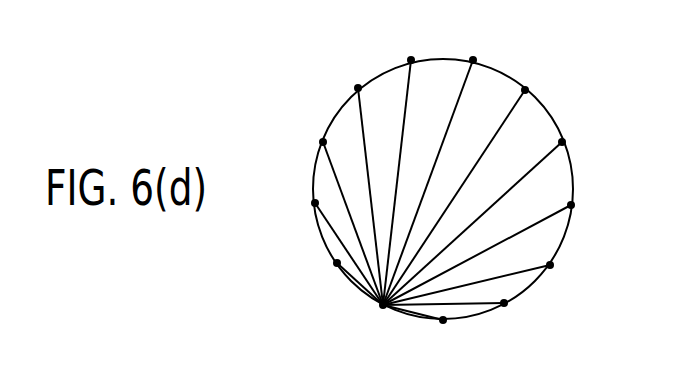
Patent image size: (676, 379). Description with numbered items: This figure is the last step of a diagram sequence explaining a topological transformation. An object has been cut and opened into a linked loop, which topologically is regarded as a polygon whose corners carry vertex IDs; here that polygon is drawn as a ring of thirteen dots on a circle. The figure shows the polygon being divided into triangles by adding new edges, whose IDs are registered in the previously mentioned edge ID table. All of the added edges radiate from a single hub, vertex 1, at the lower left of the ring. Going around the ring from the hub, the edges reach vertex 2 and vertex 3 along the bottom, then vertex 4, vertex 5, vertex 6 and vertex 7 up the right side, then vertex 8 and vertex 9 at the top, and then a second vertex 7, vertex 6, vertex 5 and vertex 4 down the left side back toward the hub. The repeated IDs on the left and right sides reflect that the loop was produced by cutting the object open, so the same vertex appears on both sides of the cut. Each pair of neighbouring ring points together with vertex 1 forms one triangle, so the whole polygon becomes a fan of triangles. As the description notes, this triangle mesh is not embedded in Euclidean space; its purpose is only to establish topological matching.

The vertex 1 is at (376, 319).
The vertex 2 is at (417, 329).
The vertex 3 is at (451, 318).
The vertex 4 is at (441, 281).
The vertex 5 is at (442, 247).
The vertex 6 is at (441, 214).
The vertex 7 is at (441, 183).
The vertex 8 is at (432, 167).
The vertex 9 is at (399, 167).